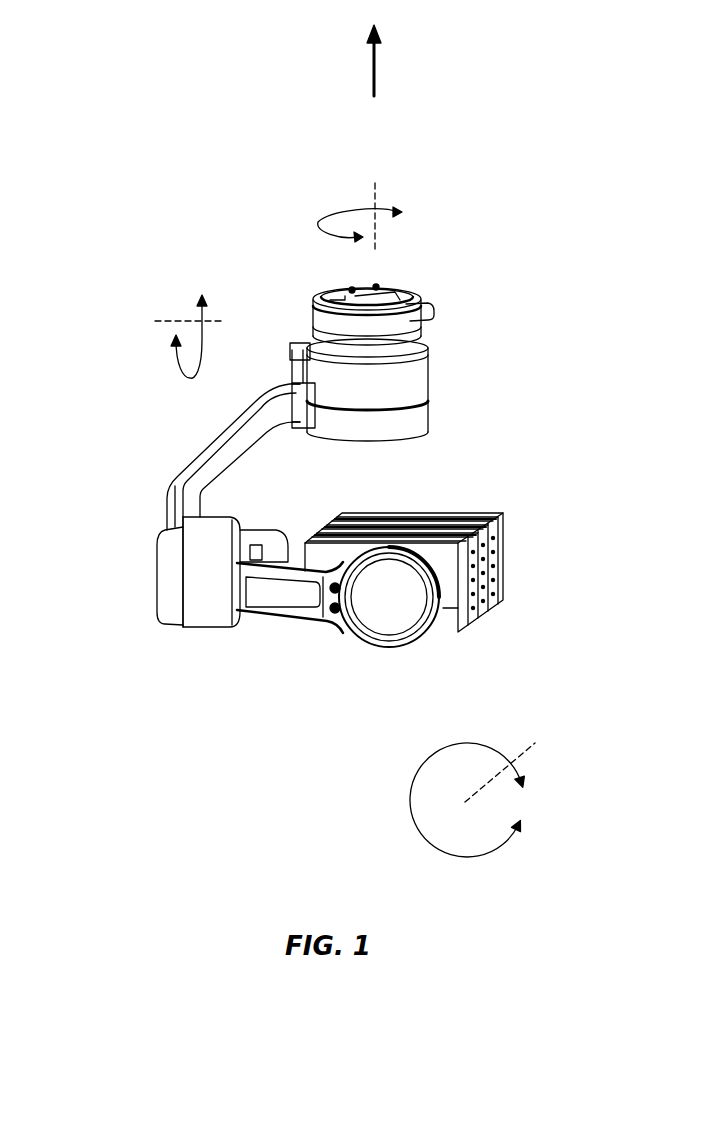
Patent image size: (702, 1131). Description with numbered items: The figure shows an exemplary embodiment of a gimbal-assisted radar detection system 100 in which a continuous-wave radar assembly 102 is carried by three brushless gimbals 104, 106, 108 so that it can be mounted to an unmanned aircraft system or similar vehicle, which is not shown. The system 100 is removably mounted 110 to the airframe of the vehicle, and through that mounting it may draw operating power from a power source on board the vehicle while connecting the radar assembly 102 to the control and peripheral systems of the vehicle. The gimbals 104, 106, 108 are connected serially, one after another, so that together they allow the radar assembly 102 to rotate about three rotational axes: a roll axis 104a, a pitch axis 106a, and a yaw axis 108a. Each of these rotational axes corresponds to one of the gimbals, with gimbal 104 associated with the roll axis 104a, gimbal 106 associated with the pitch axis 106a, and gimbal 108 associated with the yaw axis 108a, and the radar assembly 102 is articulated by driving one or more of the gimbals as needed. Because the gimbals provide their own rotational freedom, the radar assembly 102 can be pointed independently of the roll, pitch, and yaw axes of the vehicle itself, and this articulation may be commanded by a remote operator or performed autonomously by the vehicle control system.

The gimbal-assisted radar detection system 100 is at (92, 62).
The continuous-wave (CW) radar assembly 102 is at (500, 530).
The brushless gimbal 104 is at (386, 620).
The roll axis 104a is at (527, 752).
The brushless gimbal 106 is at (207, 618).
The pitch axis 106a is at (170, 319).
The brushless gimbal 108 is at (419, 391).
The yaw axis 108a is at (376, 196).
The removable mounting 110 is at (375, 53).